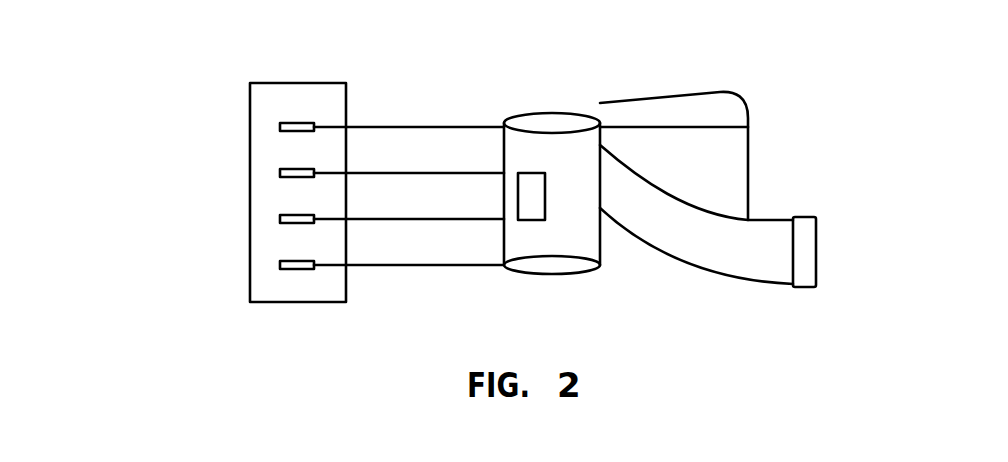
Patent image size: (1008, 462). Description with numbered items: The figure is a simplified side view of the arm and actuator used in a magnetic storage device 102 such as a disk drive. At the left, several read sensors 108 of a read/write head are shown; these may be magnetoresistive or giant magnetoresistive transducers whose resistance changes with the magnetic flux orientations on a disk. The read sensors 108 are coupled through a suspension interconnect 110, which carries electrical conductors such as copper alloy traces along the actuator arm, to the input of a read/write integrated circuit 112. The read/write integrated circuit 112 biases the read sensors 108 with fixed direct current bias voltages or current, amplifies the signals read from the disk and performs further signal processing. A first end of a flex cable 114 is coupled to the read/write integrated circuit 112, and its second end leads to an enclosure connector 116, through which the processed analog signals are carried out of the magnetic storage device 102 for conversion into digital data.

The magnetic storage device 102 is at (247, 333).
The read sensors 108 is at (278, 260).
The suspension interconnect 110 is at (417, 117).
The read/write integrated circuit 112 is at (520, 170).
The flex cable 114 is at (693, 256).
The enclosure connector 116 is at (804, 217).